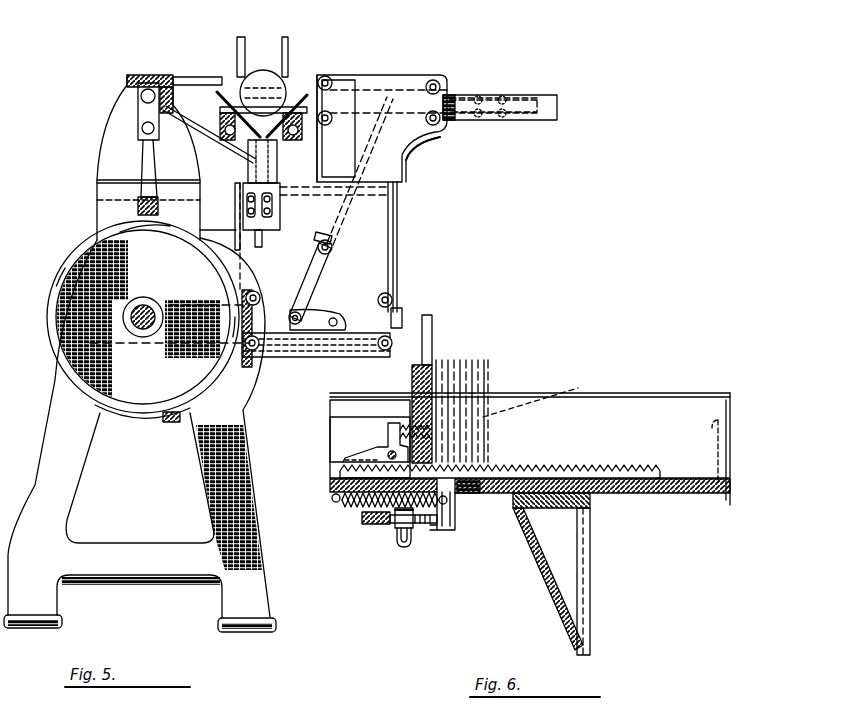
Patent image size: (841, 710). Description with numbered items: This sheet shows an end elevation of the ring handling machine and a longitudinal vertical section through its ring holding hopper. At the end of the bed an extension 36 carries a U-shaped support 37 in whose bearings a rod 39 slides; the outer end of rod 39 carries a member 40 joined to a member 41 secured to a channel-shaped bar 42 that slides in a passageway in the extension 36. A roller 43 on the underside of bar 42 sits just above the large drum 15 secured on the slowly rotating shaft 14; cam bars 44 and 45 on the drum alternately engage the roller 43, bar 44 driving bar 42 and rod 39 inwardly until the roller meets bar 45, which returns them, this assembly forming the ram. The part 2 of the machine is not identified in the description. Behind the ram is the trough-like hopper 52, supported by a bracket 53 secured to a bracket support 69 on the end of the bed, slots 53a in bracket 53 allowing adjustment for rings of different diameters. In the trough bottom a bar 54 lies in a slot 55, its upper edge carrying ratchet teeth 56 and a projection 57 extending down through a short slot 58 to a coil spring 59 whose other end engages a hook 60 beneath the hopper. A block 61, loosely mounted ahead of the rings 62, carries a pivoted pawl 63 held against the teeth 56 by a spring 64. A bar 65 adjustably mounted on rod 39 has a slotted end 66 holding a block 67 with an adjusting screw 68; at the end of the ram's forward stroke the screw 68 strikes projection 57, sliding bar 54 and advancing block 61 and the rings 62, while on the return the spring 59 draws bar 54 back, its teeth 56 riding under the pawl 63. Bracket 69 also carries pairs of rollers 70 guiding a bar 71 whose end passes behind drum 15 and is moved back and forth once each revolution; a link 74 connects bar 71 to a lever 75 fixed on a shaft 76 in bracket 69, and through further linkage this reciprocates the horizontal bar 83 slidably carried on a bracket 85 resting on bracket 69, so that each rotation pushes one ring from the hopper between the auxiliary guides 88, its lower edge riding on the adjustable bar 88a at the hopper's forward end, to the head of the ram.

In FIG. 5, the frame 2 is at (248, 500).
In FIG. 5, the shaft 14 is at (143, 330).
In FIG. 5, the drum 15 is at (132, 415).
In FIG. 5, the extension 36 is at (112, 188).
In FIG. 5, the U-shaped support 37 is at (125, 150).
In FIG. 5, the rod 39 is at (141, 96).
In FIG. 5, the member 40 is at (147, 108).
In FIG. 5, the member 41 is at (150, 165).
In FIG. 5, the channel shaped bar 42 is at (140, 200).
In FIG. 5, the roller 43 is at (135, 228).
In FIG. 5, the cam bar 44 is at (175, 420).
In FIG. 5, the cam bar 45 is at (220, 250).
In FIG. 5, the hopper 52 is at (300, 92).
In FIG. 6, the hopper 52 is at (698, 444).
In FIG. 5, the bracket 53 is at (281, 198).
In FIG. 6, the bracket 53 is at (578, 553).
In FIG. 5, the slots 53a is at (265, 227).
In FIG. 6, the bar 54 is at (502, 495).
In FIG. 6, the slot 55 is at (687, 490).
In FIG. 6, the ratchet teeth 56 is at (593, 480).
In FIG. 6, the projection 57 is at (443, 525).
In FIG. 6, the short slot 58 is at (467, 497).
In FIG. 6, the coil spring 59 is at (360, 510).
In FIG. 6, the hook 60 is at (340, 498).
In FIG. 5, the block 61 is at (270, 88).
In FIG. 6, the block 61 is at (420, 398).
In FIG. 6, the rings 62 is at (551, 393).
In FIG. 6, the pawl 63 is at (373, 452).
In FIG. 6, the spring 64 is at (410, 420).
In FIG. 5, the bar 65 is at (245, 20).
In FIG. 6, the bar 65 is at (387, 527).
In FIG. 6, the slot 66 is at (399, 545).
In FIG. 6, the block 67 is at (395, 530).
In FIG. 5, the adjusting screw 68 is at (278, 150).
In FIG. 6, the adjusting screw 68 is at (385, 512).
In FIG. 5, the bracket support 69 is at (372, 233).
In FIG. 5, the pairs of rollers 70 is at (259, 357).
In FIG. 5, the bar 71 is at (382, 323).
In FIG. 5, the link 74 is at (317, 322).
In FIG. 5, the lever 75 is at (333, 272).
In FIG. 5, the shaft 76 is at (400, 250).
In FIG. 5, the horizontal bar 83 is at (547, 118).
In FIG. 5, the bracket 85 is at (400, 143).
In FIG. 5, the auxiliary guides 88 is at (188, 113).
In FIG. 5, the bar 88a is at (243, 38).